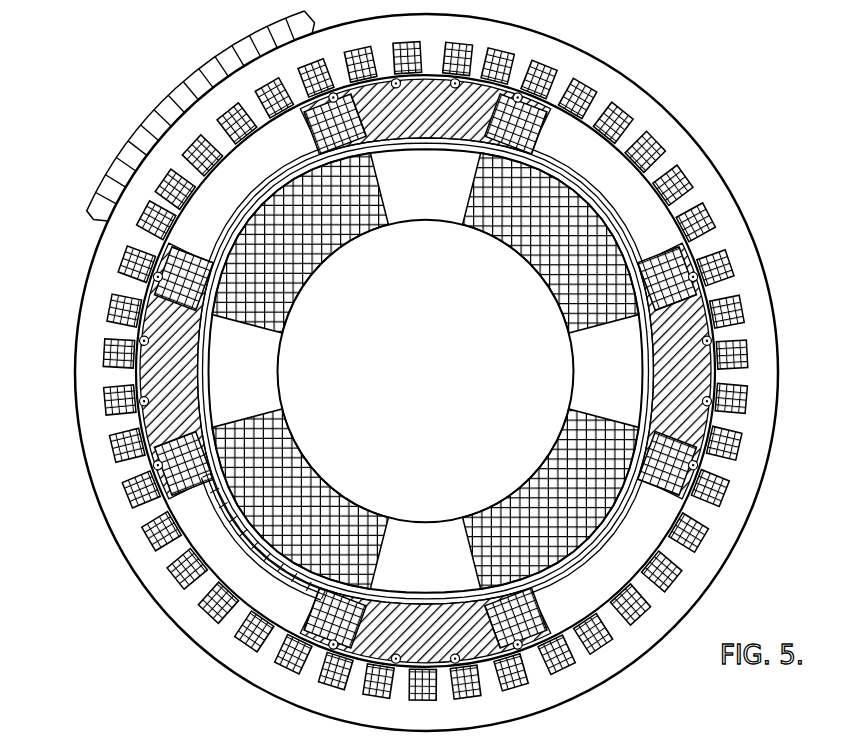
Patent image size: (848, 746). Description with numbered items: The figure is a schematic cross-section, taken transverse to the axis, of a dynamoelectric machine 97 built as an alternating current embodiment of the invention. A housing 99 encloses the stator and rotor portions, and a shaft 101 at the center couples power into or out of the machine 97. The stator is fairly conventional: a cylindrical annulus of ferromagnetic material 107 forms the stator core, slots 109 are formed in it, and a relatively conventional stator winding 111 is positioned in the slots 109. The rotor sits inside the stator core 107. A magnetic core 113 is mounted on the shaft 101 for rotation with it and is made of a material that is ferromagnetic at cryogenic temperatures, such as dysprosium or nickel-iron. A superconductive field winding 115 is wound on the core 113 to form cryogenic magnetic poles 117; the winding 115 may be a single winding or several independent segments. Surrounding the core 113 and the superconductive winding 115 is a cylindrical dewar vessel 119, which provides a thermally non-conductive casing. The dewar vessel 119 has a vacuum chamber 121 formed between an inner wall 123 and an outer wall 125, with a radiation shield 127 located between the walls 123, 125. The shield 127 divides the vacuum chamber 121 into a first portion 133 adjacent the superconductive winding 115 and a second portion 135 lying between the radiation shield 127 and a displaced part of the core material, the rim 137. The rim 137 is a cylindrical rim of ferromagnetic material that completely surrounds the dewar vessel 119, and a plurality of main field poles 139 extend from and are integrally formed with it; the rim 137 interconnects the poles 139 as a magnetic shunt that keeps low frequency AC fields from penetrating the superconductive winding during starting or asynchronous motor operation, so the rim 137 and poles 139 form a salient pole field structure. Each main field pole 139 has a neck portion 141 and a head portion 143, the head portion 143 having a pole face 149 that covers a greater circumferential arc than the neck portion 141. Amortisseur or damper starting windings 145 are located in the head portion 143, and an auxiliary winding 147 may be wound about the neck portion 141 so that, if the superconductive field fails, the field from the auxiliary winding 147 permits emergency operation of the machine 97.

The dynamoelectric machine 97 is at (75, 559).
The housing 99 is at (208, 72).
The shaft 101 is at (446, 472).
The cylindrical annulus of ferromagnetic material 107 is at (668, 116).
The slots 109 is at (712, 232).
The stator winding 111 is at (747, 358).
The magnetic core 113 is at (560, 268).
The superconductive field winding 115 is at (470, 192).
The cryogenic magnetic poles 117 is at (262, 350).
The dewar vessel 119 is at (298, 178).
The vacuum chamber 121 is at (603, 505).
The inner wall 123 is at (538, 158).
The outer wall 125 is at (615, 245).
The radiation shield 127 is at (578, 192).
The first portion of vacuum chamber 133 is at (258, 516).
The second portion of vacuum chamber 135 is at (283, 560).
The rim 137 is at (258, 210).
The main field poles 139 is at (714, 423).
The neck portion 141 is at (687, 383).
The head portion 143 is at (700, 478).
The amortisseur or damper starting windings 145 is at (140, 390).
The auxiliary winding 147 is at (548, 100).
The pole face 149 is at (137, 423).